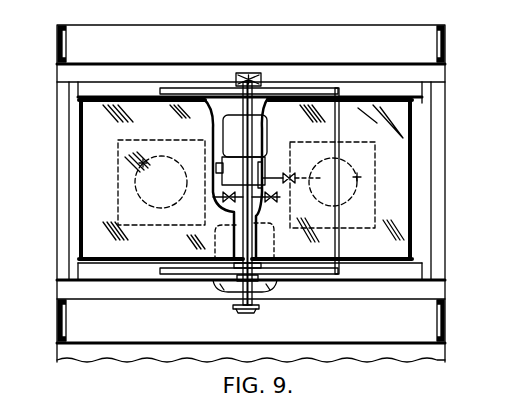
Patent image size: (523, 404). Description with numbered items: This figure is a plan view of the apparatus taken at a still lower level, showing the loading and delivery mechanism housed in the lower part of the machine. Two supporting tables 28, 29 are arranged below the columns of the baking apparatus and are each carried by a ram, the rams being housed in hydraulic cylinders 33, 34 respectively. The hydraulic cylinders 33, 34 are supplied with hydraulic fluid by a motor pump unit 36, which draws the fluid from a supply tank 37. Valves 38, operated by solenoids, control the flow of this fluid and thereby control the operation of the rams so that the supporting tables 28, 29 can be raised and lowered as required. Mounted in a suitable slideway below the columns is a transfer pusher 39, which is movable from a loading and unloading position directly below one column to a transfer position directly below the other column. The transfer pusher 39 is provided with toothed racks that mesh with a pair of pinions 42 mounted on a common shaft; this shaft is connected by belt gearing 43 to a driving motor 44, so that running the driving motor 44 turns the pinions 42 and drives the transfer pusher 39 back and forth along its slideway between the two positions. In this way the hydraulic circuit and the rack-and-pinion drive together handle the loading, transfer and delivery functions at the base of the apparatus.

The supporting table 28 is at (95, 179).
The supporting table 29 is at (398, 192).
The hydraulic cylinder 33 is at (120, 150).
The hydraulic cylinder 34 is at (375, 168).
The motor pump unit 36 is at (257, 130).
The supply tank 37 is at (235, 163).
The valves 38 is at (292, 175).
The transfer pusher 39 is at (325, 92).
The pinions 42 is at (258, 76).
The belt gearing 43 is at (247, 313).
The driving motor 44 is at (222, 290).